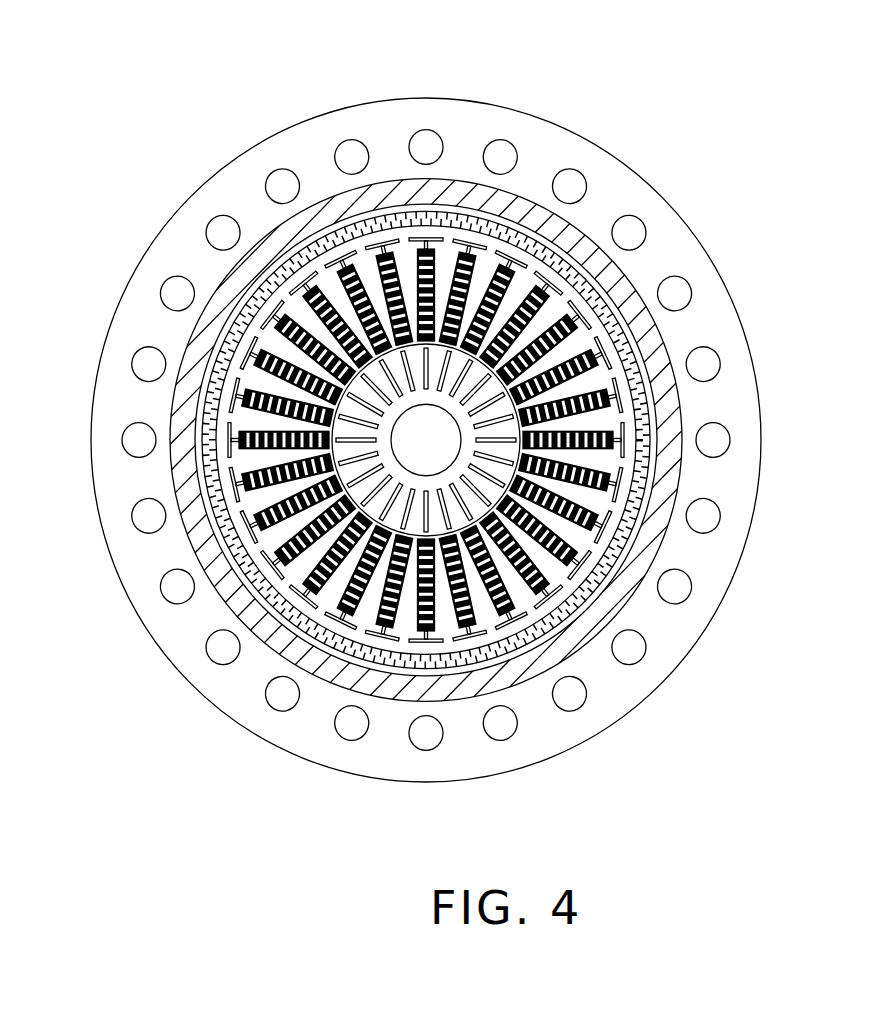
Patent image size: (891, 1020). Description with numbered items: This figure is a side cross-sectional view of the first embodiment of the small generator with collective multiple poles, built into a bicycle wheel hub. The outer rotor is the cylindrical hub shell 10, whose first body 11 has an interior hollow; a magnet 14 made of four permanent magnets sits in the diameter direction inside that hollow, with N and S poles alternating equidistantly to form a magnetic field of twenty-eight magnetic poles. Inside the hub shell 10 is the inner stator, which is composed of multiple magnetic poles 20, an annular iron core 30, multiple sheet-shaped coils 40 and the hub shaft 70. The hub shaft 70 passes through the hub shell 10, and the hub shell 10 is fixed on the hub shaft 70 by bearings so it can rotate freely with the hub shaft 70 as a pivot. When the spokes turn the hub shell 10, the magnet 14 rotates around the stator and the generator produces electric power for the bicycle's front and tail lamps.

The hub shell 10 is at (599, 132).
The first body 11 is at (617, 203).
The magnet 14 is at (630, 345).
The magnetic poles 20 is at (646, 436).
The annular iron core 30 is at (537, 483).
The sheet-shaped coils 40 is at (365, 252).
The hub shaft 70 is at (429, 487).